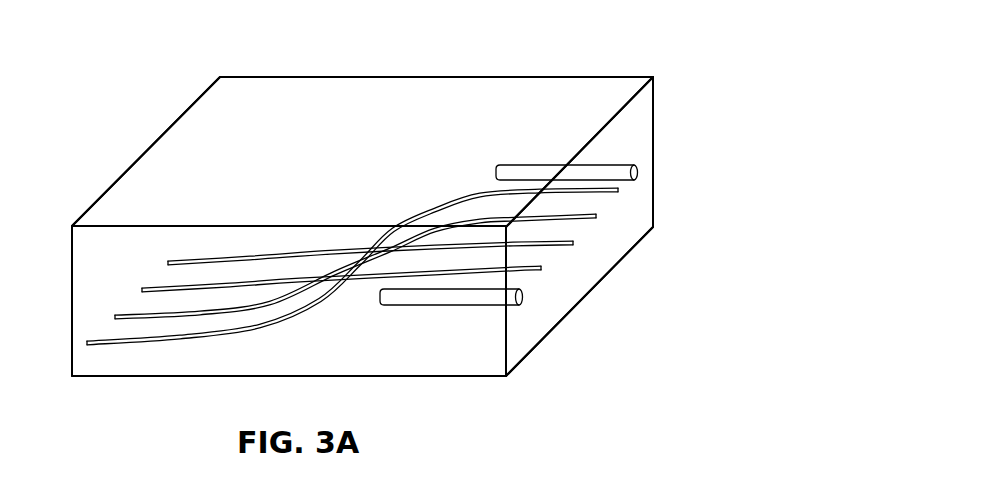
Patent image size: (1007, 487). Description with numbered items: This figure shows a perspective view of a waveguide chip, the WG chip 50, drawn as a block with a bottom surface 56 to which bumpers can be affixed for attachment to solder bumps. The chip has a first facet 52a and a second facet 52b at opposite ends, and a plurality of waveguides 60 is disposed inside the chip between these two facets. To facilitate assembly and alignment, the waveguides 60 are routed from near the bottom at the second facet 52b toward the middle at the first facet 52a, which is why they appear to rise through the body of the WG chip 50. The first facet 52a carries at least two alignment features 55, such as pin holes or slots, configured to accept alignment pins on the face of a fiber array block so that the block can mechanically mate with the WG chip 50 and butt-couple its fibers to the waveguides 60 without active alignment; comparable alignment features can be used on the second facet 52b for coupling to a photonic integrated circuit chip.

The WG chip 50 is at (624, 30).
The first facet 52a is at (525, 340).
The second facet 52b is at (149, 146).
The alignment features 55 is at (638, 171).
The bottom surface 56 is at (175, 378).
The waveguides 60 is at (481, 192).